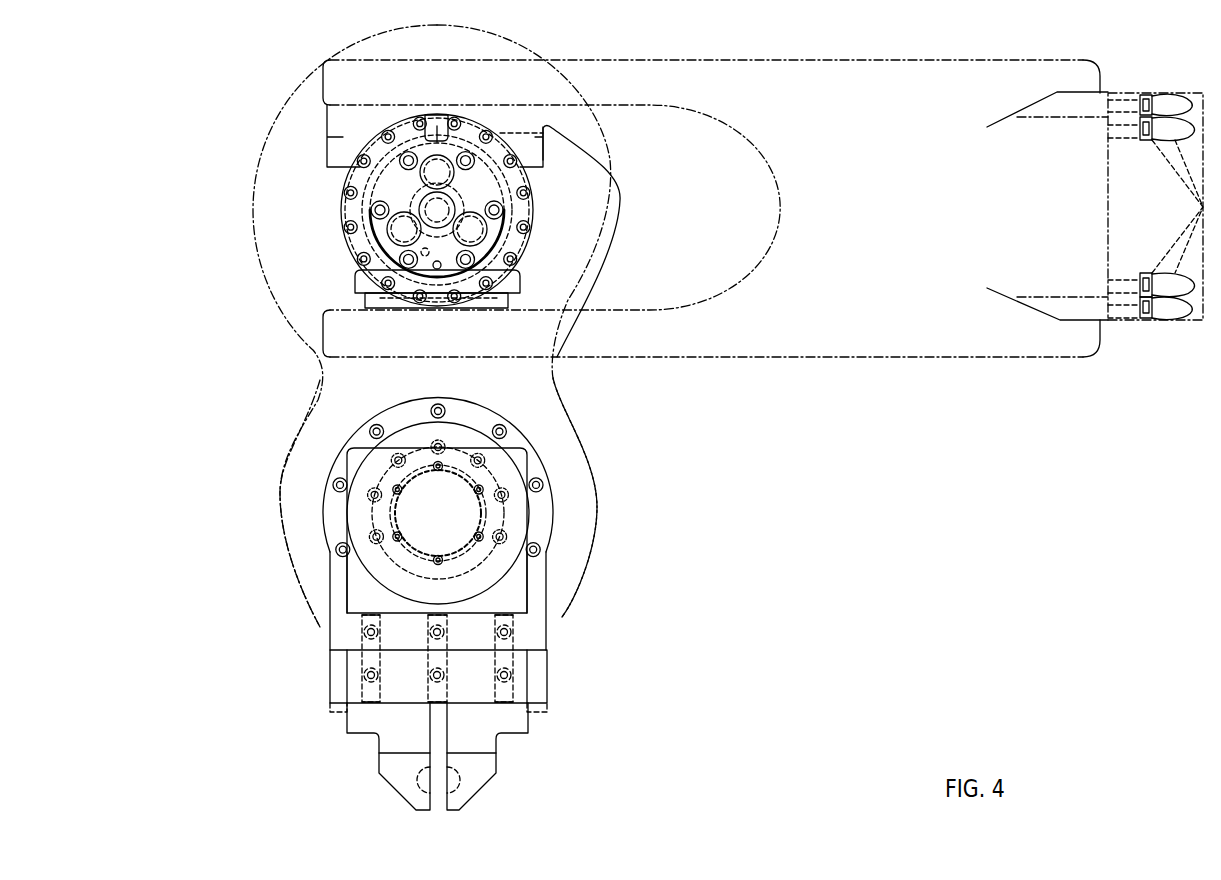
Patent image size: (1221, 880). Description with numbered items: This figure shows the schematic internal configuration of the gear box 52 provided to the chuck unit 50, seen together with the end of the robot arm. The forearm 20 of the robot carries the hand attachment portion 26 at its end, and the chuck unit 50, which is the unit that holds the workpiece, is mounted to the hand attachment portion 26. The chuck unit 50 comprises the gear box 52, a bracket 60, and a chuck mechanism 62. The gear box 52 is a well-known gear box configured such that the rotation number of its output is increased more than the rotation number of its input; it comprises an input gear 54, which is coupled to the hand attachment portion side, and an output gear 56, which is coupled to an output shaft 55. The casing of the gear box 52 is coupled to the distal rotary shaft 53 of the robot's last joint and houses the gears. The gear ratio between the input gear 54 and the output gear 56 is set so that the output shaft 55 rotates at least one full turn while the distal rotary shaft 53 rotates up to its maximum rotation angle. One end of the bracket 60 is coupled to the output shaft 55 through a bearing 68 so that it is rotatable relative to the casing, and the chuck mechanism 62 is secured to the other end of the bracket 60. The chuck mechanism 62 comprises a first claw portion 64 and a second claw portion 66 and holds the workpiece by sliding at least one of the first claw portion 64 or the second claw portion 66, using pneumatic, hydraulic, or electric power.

The forearm 20 is at (763, 279).
The hand attachment portion 26 is at (483, 158).
The chuck unit 50 is at (424, 418).
The gear box 52 is at (430, 562).
The distal rotary shaft 53 is at (352, 192).
The input gear 54 is at (386, 326).
The output shaft 55 is at (527, 513).
The output gear 56 is at (488, 504).
The bracket 60 is at (362, 626).
The chuck mechanism 62 is at (414, 744).
The first claw portion 64 is at (351, 765).
The second claw portion 66 is at (531, 756).
The bearing 68 is at (498, 505).